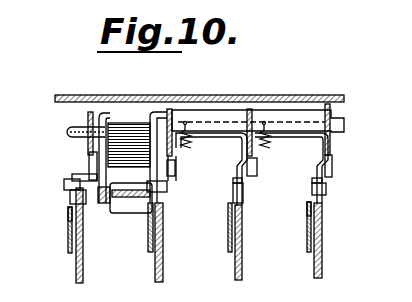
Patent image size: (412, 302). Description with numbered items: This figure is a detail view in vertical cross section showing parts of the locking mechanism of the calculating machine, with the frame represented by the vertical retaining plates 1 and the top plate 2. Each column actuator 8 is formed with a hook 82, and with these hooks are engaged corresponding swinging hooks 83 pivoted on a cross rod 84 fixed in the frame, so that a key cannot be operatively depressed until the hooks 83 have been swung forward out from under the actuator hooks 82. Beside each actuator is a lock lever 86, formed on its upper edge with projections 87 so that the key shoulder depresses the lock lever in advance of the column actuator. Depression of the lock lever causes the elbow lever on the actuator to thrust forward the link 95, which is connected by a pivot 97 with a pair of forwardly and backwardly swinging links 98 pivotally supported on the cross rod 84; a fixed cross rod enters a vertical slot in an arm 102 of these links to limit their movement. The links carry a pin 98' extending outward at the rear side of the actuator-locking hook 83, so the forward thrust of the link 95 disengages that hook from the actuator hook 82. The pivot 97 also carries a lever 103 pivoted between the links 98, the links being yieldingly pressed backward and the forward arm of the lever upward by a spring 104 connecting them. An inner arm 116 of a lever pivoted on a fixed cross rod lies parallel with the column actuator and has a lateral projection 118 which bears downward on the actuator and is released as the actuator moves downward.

The vertical retaining plates 1 is at (88, 117).
The top plate 2 is at (257, 96).
The column actuator 8 is at (83, 264).
The hook 82 is at (70, 197).
The swinging hook 83 is at (207, 116).
The cross rod 84 is at (80, 137).
The lock lever 86 is at (68, 246).
The projections 87 is at (68, 219).
The link 95 is at (103, 203).
The pivot 97 is at (142, 195).
The swinging links 98 is at (118, 155).
The pin 98' is at (184, 194).
The arm 102 is at (88, 160).
The lever 103 is at (116, 196).
The spring 104 is at (192, 143).
The inner arm of lever 116 is at (175, 168).
The lateral projection 118 is at (70, 183).